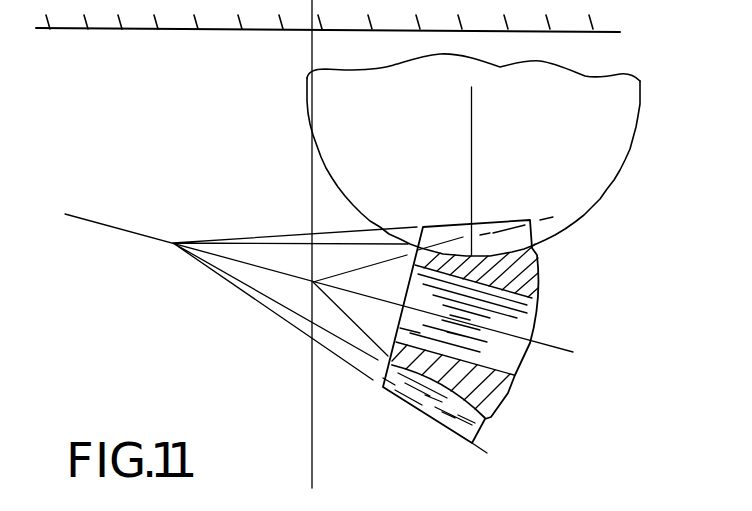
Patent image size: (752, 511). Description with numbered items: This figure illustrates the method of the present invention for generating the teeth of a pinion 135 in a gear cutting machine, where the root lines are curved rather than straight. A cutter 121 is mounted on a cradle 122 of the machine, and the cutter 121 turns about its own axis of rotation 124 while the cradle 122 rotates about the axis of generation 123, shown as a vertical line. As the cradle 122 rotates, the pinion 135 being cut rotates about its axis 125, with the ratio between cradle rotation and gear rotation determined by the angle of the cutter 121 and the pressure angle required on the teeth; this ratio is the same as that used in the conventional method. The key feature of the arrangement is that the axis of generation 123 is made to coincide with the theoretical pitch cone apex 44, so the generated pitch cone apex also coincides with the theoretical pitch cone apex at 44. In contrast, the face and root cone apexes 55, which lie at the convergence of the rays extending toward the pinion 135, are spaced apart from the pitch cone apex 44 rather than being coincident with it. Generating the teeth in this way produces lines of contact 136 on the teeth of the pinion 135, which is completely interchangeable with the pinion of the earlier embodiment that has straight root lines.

The cradle 122 is at (607, 32).
The cutter 121 is at (600, 200).
The axis of rotation of the cutter 124 is at (474, 105).
The axis of generation 123 is at (310, 423).
The face and root cone apexes 55 is at (171, 246).
The theoretical pitch cone apex 44 is at (313, 283).
The axis of the gear 125 is at (572, 353).
The pinion 135 is at (510, 398).
The lines of contact 136 is at (435, 407).